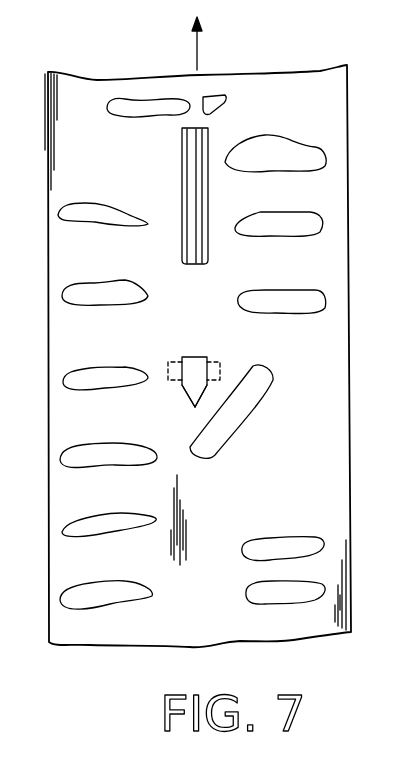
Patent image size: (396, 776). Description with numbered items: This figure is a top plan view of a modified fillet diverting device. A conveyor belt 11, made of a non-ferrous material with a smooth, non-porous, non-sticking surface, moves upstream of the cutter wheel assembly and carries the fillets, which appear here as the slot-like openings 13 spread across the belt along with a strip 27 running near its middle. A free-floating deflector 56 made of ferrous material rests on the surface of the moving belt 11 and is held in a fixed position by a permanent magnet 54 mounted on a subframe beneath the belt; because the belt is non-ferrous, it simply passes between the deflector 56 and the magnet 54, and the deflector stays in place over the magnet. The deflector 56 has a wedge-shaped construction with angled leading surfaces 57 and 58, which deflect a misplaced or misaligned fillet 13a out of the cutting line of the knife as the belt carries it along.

The conveyor belt 11 is at (345, 350).
The slots 13 is at (295, 227).
The misplaced fillet 13a is at (243, 408).
The web strip 27 is at (178, 151).
The permanent magnet 54 is at (220, 362).
The deflector 56 is at (193, 365).
The angled leading surface 57 is at (183, 393).
The angled leading surface 58 is at (200, 413).